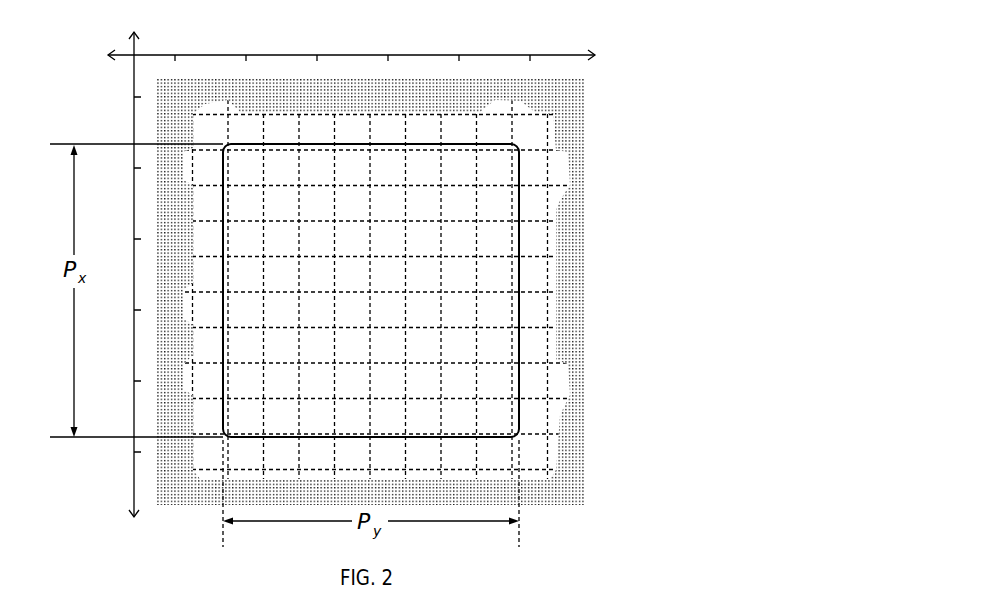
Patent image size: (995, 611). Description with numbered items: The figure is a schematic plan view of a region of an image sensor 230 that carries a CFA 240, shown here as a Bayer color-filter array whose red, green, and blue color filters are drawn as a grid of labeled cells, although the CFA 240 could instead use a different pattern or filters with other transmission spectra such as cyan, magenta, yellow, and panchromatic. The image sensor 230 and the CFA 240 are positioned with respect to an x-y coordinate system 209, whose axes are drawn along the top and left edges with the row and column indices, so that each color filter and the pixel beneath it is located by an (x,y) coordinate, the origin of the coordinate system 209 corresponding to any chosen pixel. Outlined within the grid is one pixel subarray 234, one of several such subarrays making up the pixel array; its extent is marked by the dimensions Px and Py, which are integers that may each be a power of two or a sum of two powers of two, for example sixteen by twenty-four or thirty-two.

The x-y coordinate system 209 is at (111, 36).
The image sensor 230 is at (622, 447).
The pixel subarray 234 is at (519, 251).
The color filter array (CFA) 240 is at (560, 198).